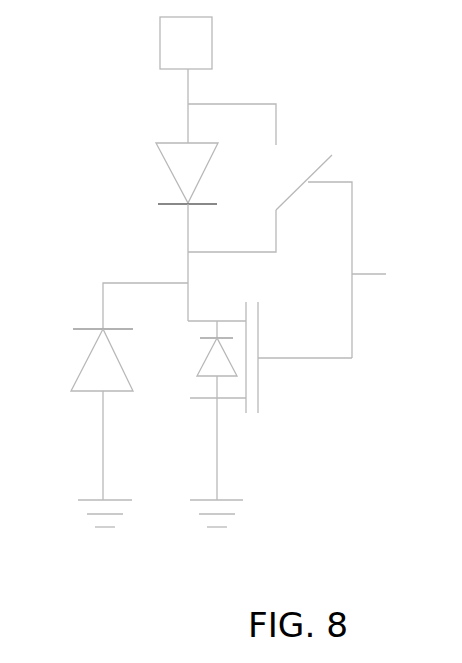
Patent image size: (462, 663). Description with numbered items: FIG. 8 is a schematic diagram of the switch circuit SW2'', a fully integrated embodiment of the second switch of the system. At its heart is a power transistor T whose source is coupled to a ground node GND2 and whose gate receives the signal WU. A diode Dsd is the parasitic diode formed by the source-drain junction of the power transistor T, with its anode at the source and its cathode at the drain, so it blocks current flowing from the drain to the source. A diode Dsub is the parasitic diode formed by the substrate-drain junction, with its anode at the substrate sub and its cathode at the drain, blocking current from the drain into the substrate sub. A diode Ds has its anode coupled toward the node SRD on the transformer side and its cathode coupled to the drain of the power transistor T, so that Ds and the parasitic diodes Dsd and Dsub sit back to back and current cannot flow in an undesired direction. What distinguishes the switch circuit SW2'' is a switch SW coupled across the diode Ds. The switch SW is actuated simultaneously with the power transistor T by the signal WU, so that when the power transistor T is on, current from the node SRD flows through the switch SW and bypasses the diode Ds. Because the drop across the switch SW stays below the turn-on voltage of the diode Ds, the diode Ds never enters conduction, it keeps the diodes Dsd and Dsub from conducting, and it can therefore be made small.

The switch circuit SW2'' is at (225, 273).
The node SRD is at (157, 43).
The diode Ds is at (170, 173).
The switch SW is at (270, 256).
The signal WU is at (394, 274).
The diode Dsub is at (73, 360).
The diode Dsd is at (196, 357).
The power transistor T is at (299, 357).
The substrate sub is at (82, 512).
The ground node GND2 is at (257, 515).